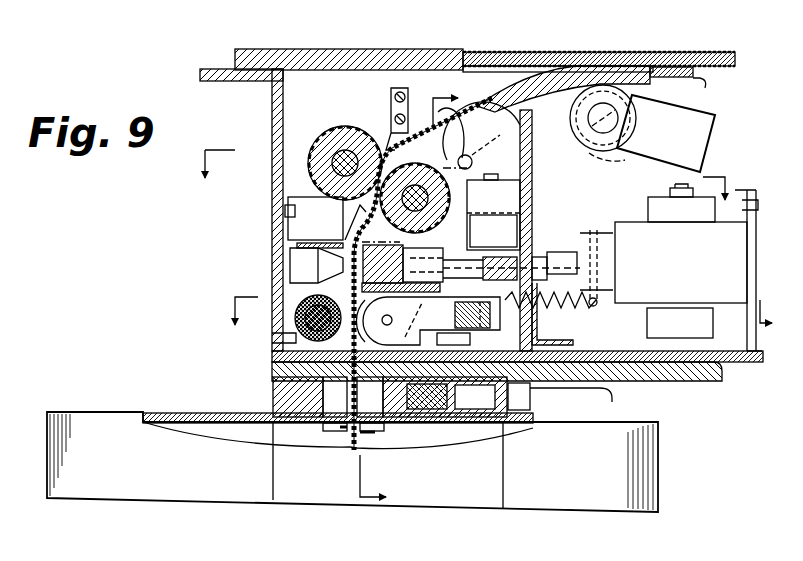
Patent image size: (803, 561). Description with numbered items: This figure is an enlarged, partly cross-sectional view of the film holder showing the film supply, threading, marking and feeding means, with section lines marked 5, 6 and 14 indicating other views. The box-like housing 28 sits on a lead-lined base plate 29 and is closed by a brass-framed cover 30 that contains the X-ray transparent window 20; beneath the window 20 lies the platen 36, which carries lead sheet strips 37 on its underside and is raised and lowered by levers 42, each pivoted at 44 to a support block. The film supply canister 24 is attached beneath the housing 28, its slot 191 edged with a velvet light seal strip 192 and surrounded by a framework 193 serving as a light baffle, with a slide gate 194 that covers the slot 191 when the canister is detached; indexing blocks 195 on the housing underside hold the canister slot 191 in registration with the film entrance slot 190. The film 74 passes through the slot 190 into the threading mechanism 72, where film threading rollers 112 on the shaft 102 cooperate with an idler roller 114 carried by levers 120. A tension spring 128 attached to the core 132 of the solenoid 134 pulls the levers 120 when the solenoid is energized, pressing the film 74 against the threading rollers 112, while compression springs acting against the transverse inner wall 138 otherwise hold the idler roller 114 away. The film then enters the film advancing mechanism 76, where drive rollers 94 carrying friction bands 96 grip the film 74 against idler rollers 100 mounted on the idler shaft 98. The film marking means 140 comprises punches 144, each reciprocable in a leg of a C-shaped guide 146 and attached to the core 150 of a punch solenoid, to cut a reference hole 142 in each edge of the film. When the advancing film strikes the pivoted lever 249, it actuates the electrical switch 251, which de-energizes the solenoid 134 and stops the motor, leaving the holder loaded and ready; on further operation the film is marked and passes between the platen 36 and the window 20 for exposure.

The cover 30 is at (397, 49).
The housing 28 is at (272, 154).
The film threading mechanism 72 is at (292, 360).
The base plate 29 is at (707, 386).
The film 74 is at (499, 72).
The window 20 is at (592, 60).
The lead sheet strips 37 is at (639, 62).
The platen 36 is at (705, 75).
The levers 42 is at (622, 150).
The pivot 44 is at (572, 121).
The idler rollers 100 is at (357, 128).
The film advancing mechanism 76 is at (302, 188).
The idler shaft 98 is at (330, 152).
The pivoted lever 249 is at (458, 139).
The drive rollers 94 is at (437, 200).
The electrical switch 251 is at (495, 231).
The levers 120 is at (464, 310).
The bands 96 is at (534, 200).
The idler roller 114 is at (407, 305).
The tension spring 128 is at (599, 293).
The core 150 is at (594, 233).
The punches 144 is at (577, 264).
The transverse inner wall 138 is at (539, 320).
The core 132 is at (617, 268).
The solenoid 134 is at (680, 323).
The reference hole 142 is at (345, 238).
The film marking means 140 is at (269, 254).
The guide 146 is at (292, 290).
The film threading rollers 112 is at (296, 311).
The shaft 102 is at (296, 336).
The framework 193 is at (275, 394).
The film entrance slot 190 is at (273, 375).
The indexing blocks 195 is at (532, 402).
The slide gate 194 is at (616, 400).
The velvet light seal strip 192 is at (342, 430).
The slot 191 is at (377, 433).
The film supply canister 24 is at (135, 401).
The section line 5- 5 is at (461, 181).
The section line 6- 6 is at (486, 322).
The section line 14- 14 is at (415, 295).